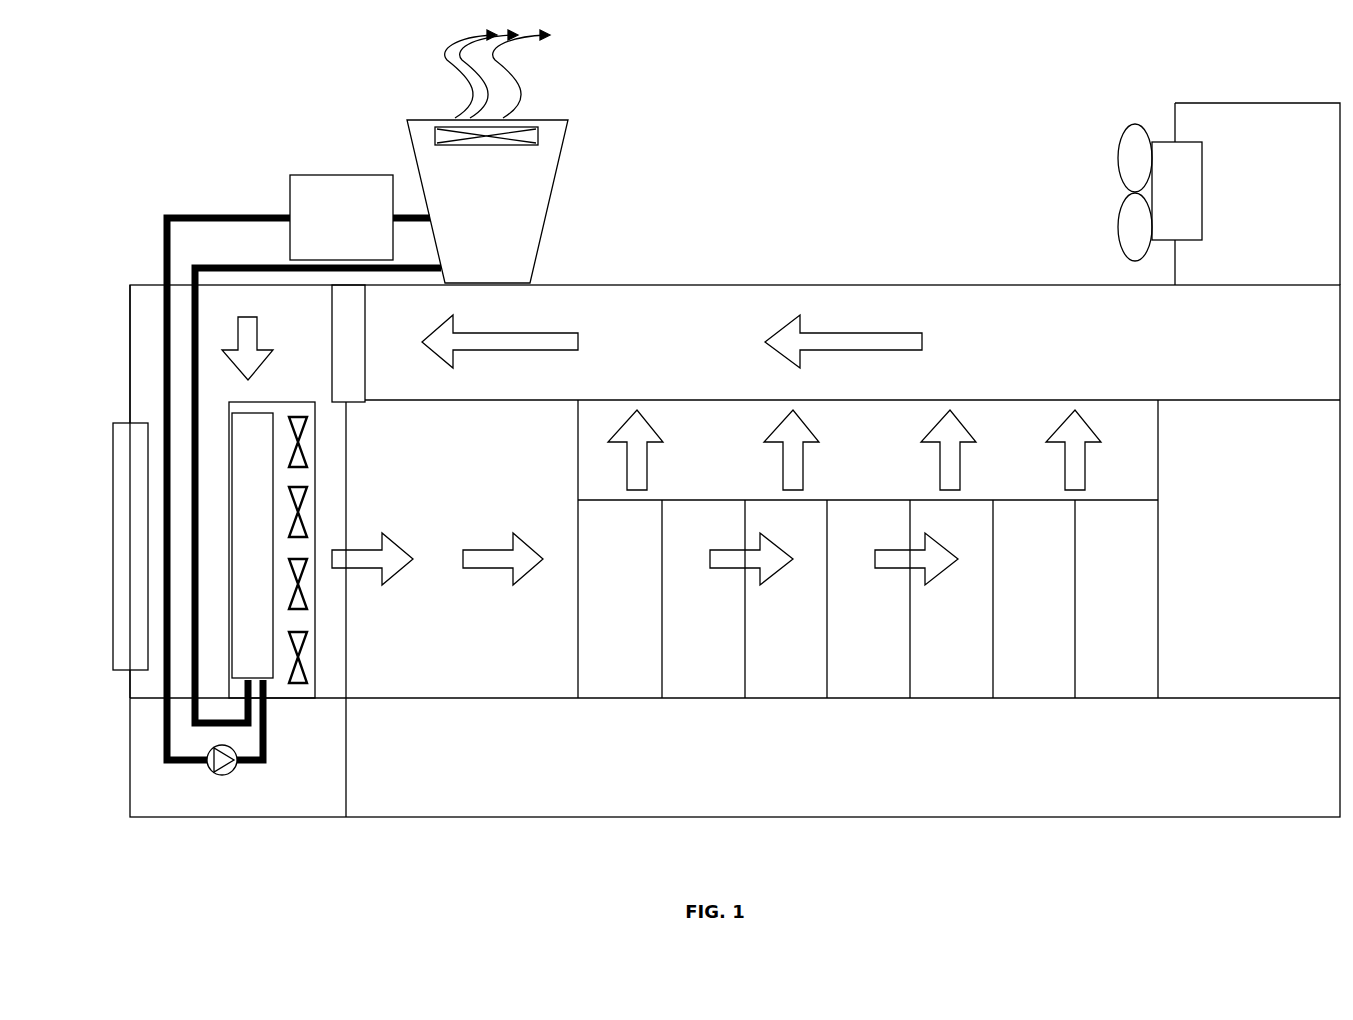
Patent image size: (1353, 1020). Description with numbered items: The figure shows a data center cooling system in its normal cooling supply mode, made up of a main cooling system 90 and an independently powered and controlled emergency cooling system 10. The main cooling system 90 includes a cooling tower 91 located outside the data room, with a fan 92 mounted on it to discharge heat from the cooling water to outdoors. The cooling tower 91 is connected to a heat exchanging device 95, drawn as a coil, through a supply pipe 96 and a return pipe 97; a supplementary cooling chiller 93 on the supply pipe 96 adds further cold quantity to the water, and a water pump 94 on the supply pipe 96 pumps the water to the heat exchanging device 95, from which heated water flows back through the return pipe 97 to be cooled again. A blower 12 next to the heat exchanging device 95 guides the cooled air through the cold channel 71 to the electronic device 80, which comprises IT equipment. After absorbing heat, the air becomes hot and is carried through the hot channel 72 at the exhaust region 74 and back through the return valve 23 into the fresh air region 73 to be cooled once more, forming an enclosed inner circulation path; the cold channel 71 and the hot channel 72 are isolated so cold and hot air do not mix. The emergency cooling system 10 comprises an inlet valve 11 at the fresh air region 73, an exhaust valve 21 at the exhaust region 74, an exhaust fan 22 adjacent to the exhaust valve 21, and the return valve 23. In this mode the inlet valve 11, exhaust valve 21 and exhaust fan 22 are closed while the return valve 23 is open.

The emergency cooling system 10 is at (112, 598).
The inlet valve 11 is at (113, 446).
The blower 12 is at (305, 660).
The exhaust valve 21 is at (1192, 155).
The exhaust fan 22 is at (1122, 158).
The return valve 23 is at (350, 395).
The cold channel 71 is at (498, 678).
The hot channel 72 is at (968, 313).
The fresh air region 73 is at (142, 362).
The exhaust region 74 is at (708, 310).
The electronic device 80 is at (880, 670).
The main cooling system 90 is at (578, 107).
The cooling tower 91 is at (540, 200).
The fan 92 is at (540, 135).
The supplementary cooling chiller 93 is at (290, 193).
The water pump 94 is at (236, 770).
The heat exchanging device 95 is at (275, 470).
The supply pipe 96 is at (163, 250).
The return pipe 97 is at (238, 268).